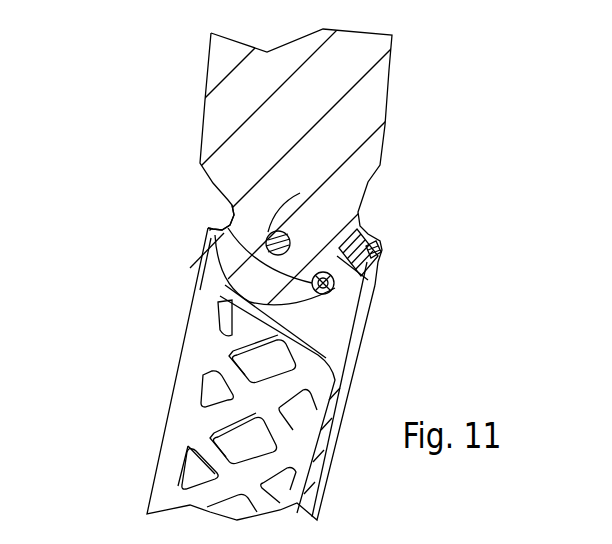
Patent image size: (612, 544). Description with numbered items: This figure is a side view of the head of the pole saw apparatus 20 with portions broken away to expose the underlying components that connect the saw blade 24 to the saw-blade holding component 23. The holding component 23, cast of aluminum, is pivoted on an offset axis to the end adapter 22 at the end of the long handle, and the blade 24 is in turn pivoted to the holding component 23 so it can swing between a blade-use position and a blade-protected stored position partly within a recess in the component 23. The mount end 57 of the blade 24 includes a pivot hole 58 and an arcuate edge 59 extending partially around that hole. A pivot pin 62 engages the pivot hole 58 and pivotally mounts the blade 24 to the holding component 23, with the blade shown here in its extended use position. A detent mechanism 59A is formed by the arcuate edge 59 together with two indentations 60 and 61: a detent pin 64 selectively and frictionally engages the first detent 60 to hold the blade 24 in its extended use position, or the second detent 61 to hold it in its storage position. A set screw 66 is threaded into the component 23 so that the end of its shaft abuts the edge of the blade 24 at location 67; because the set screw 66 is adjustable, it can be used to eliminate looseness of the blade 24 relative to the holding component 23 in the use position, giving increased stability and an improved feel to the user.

The pole saw apparatus 20 is at (131, 134).
The end adapter 22 is at (542, 9).
The saw-blade holding component 23 is at (182, 410).
The saw blade 24 is at (372, 105).
The mount end 57 is at (240, 250).
The pivot hole 58 is at (300, 193).
The arcuate edge 59 is at (303, 302).
The detent mechanism 59A is at (297, 283).
The first detent indentation 60 is at (337, 285).
The second detent indentation 61 is at (212, 226).
The pivot pin 62 is at (287, 233).
The detent pin 64 is at (350, 313).
The set screw 66 is at (380, 263).
The abutment location 67 is at (367, 234).